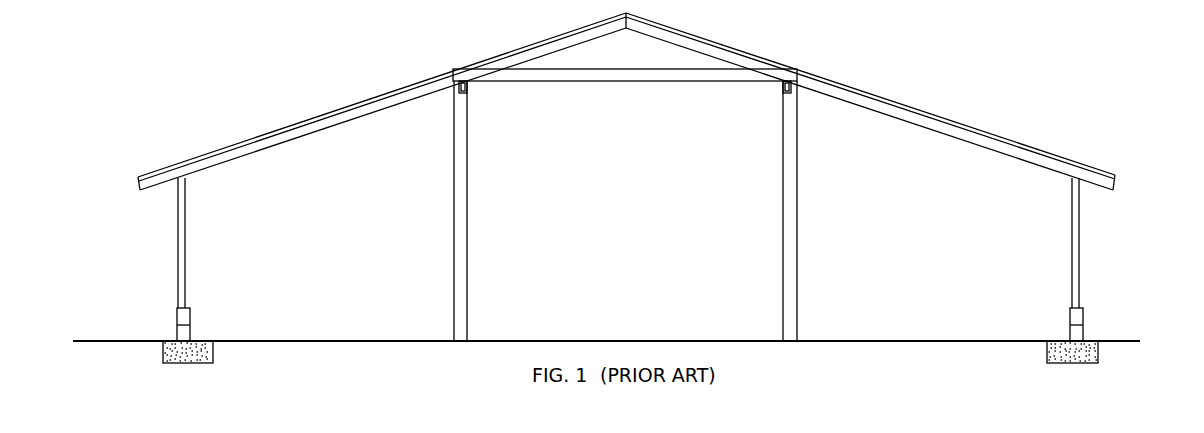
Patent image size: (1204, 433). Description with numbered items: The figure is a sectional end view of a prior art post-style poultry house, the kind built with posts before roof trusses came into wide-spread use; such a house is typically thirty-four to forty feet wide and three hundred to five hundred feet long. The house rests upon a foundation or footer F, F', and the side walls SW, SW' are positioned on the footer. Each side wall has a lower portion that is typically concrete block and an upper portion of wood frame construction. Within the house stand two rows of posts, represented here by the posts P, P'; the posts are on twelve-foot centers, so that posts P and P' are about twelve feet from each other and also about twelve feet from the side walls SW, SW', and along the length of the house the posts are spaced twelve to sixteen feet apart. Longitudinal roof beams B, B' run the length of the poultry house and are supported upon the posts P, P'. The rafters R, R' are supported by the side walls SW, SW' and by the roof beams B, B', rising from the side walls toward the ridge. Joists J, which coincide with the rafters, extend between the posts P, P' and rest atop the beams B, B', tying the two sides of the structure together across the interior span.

The rafter R' is at (382, 107).
The rafter R is at (870, 107).
The joist J is at (613, 77).
The post P' is at (485, 211).
The post P is at (812, 211).
The longitudinal roof beam B' is at (486, 118).
The longitudinal roof beam B is at (769, 118).
The side wall SW' is at (229, 259).
The side wall SW is at (1118, 259).
The foundation or footer F' is at (188, 376).
The foundation or footer F is at (1072, 376).